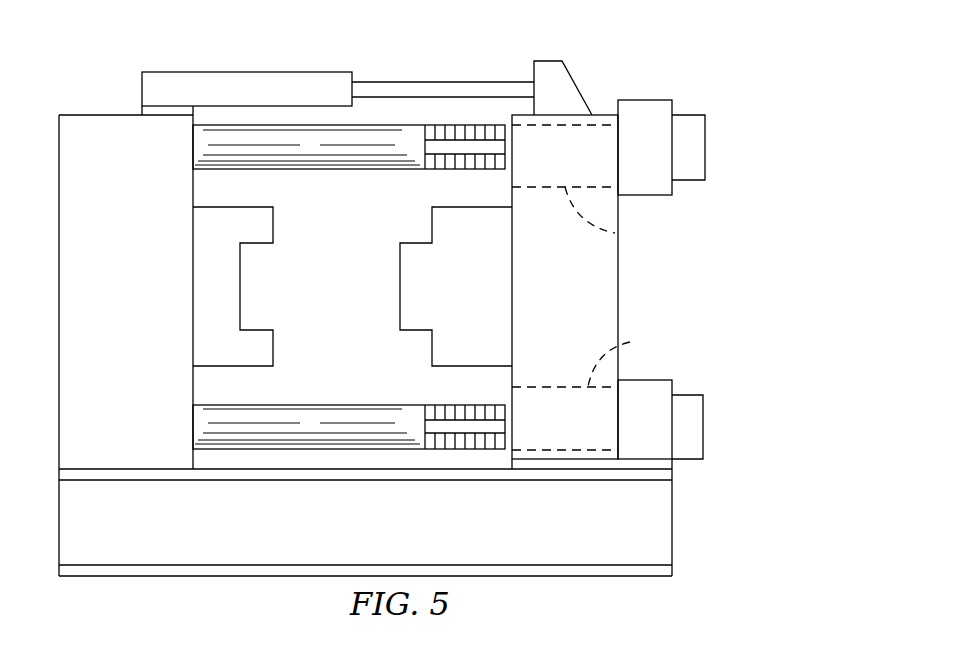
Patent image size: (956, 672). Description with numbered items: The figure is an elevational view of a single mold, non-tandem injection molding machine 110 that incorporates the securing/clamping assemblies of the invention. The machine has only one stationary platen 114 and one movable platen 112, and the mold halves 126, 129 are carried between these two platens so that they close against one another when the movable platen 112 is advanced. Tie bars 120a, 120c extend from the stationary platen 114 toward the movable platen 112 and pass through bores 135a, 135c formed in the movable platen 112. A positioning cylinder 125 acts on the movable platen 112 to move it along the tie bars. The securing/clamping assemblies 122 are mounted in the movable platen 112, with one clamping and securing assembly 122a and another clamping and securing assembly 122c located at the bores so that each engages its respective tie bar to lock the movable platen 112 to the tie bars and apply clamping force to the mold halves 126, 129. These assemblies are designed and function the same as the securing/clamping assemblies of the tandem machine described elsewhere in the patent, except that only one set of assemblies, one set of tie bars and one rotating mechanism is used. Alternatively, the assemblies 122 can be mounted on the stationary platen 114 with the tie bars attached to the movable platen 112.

The single mold injection molding machine 110 is at (365, 53).
The movable platen 112 is at (580, 318).
The stationary platen 114 is at (142, 343).
The tie bar 120a is at (405, 133).
The tie bar 120c is at (339, 437).
The securing/clamping assemblies 122 is at (675, 90).
The clamping and securing assembly 122a is at (643, 112).
The clamping and securing assembly 122c is at (655, 388).
The positioning cylinder 125 is at (264, 79).
The mold half 126 is at (450, 354).
The mold half 129 is at (260, 227).
The bore 135a is at (617, 233).
The bore 135c is at (638, 355).